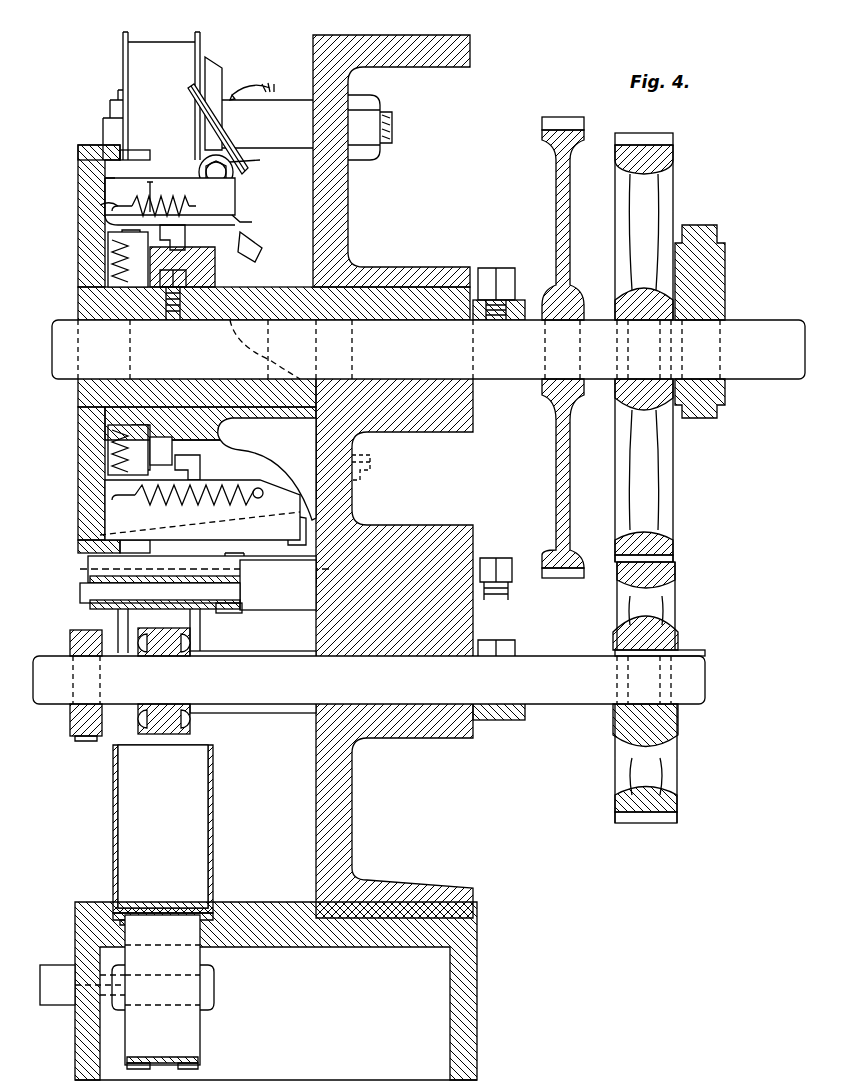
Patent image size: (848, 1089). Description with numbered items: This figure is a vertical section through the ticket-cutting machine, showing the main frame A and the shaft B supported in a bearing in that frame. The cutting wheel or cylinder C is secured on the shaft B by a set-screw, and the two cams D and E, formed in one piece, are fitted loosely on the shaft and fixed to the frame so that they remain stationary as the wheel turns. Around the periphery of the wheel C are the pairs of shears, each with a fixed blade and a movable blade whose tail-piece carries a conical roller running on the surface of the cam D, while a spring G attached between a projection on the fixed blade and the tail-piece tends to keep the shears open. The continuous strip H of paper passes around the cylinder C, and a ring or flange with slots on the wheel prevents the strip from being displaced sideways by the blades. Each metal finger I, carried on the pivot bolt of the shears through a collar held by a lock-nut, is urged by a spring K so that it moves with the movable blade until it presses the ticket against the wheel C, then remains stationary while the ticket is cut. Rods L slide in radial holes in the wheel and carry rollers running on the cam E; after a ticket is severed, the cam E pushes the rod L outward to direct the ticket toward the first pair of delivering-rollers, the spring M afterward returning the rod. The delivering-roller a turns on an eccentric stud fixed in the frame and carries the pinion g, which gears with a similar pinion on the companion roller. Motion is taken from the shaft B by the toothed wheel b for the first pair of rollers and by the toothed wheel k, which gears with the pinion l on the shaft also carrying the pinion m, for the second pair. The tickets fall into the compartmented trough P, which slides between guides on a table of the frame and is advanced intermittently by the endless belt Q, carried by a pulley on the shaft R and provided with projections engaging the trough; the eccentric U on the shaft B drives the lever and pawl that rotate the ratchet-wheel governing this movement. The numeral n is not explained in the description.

The frame A is at (393, 476).
The shaft B is at (428, 349).
The toothed wheel b is at (542, 470).
The toothed wheel k is at (654, 347).
The eccentric U is at (700, 321).
The pinion l is at (659, 692).
The pinion m is at (72, 640).
The bearing n is at (164, 681).
The box or trough P is at (163, 829).
The shaft R is at (171, 990).
The endless belt Q is at (200, 1058).
The continuous strip H is at (151, 96).
The spring K is at (267, 124).
The metal finger I is at (231, 129).
The cutting wheel or cylinder C is at (135, 216).
The cam D is at (267, 469).
The cam E is at (161, 448).
The spring G is at (234, 476).
The pin or rod L is at (139, 350).
The spring M is at (118, 353).
The delivering-roller a is at (160, 618).
The pinion g is at (236, 612).